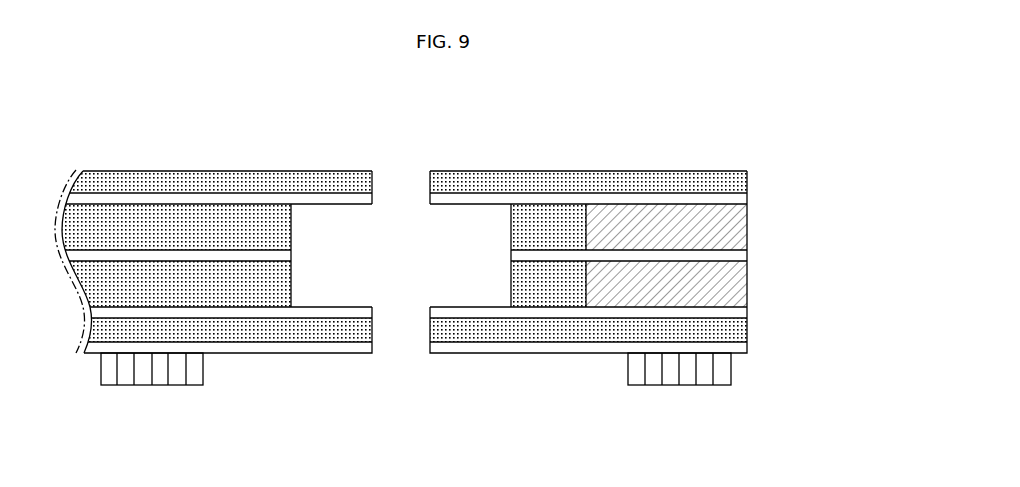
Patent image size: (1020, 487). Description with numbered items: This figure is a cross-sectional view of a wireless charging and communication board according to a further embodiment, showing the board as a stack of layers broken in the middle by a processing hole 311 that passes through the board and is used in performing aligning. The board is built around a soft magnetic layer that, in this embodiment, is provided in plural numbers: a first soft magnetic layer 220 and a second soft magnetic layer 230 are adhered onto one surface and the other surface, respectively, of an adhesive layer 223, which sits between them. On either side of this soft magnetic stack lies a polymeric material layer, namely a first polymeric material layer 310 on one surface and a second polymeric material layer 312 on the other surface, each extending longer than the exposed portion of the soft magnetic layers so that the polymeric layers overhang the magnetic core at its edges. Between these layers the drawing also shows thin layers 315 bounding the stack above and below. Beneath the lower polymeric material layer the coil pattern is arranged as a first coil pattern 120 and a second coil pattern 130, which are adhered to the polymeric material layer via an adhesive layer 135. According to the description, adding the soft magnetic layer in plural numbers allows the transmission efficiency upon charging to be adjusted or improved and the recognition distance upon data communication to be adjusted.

The processing hole 311 is at (408, 168).
The first polymeric material layer 310 is at (747, 181).
The adhesive layer 315 is at (747, 199).
The second soft magnetic layer 230 is at (747, 230).
The first soft magnetic layer 220 is at (544, 215).
The adhesive layer 223 is at (747, 256).
The second polymeric material layer 312 is at (747, 332).
The adhesive layer 135 is at (747, 350).
The first coil pattern 120 is at (148, 385).
The second coil pattern 130 is at (680, 385).